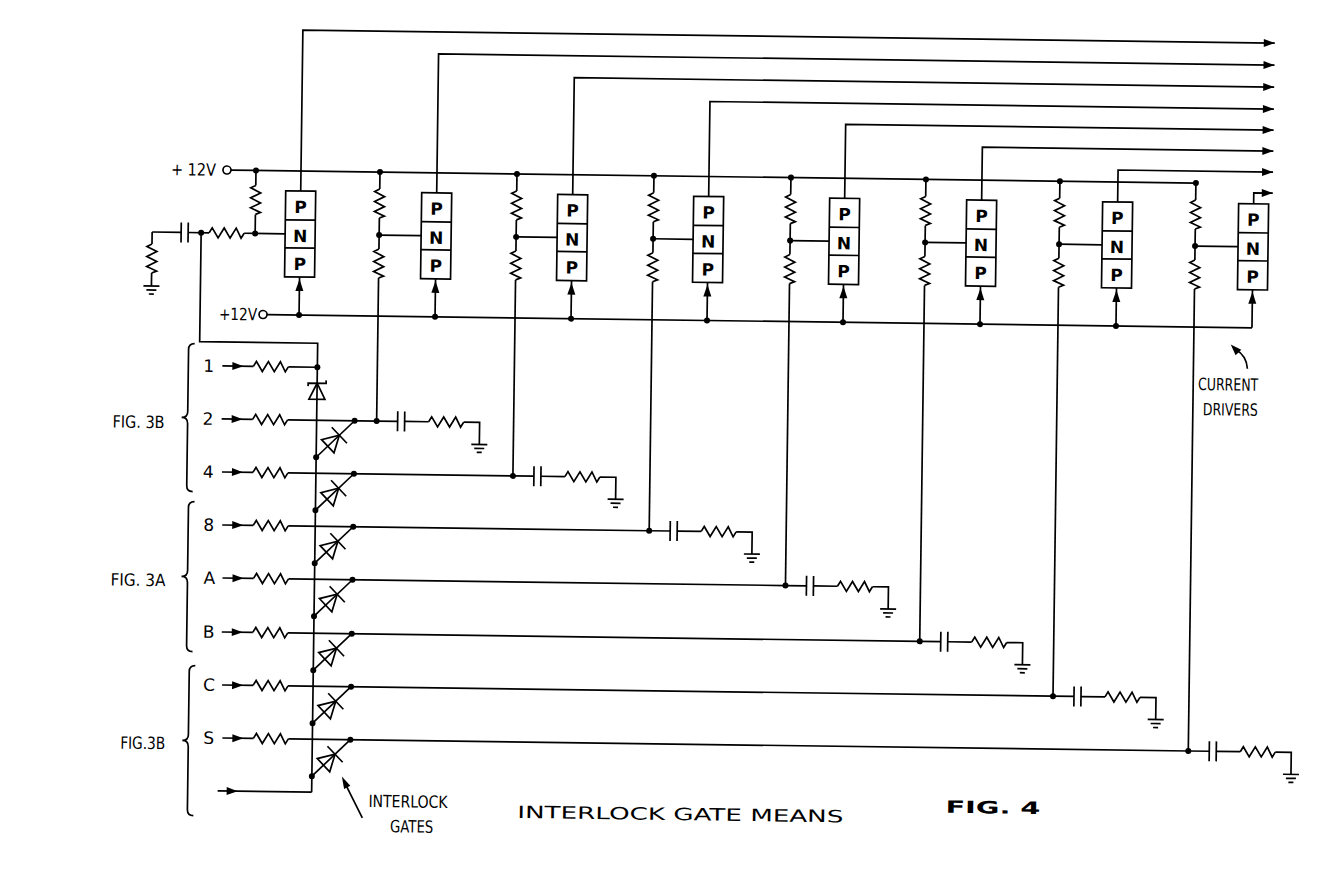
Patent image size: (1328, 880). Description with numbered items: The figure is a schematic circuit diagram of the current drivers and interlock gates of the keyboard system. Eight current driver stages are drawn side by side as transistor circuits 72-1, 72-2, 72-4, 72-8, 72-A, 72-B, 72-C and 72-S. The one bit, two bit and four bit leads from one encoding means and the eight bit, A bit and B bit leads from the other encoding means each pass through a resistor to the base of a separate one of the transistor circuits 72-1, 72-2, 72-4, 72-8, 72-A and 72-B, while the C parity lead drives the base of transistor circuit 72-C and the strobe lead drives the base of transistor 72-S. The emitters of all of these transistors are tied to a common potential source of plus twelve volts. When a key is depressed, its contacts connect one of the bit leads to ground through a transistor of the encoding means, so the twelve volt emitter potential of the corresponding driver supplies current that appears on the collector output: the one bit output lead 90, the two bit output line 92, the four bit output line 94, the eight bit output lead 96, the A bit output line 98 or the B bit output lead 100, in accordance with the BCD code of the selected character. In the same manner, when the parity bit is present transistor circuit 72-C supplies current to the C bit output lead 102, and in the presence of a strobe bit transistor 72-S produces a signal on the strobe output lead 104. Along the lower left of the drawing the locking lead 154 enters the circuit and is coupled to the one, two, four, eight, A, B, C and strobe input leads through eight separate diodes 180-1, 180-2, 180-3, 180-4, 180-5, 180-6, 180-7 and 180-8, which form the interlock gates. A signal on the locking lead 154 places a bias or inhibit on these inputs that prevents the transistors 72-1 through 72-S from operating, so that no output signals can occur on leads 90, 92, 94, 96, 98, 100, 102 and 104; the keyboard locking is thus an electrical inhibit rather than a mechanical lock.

The 1 bit output lead 90 is at (301, 36).
The 2 bit output line 92 is at (437, 57).
The 4 bit output line 94 is at (573, 80).
The 8 bit output lead 96 is at (709, 101).
The A bit output line 98 is at (845, 122).
The B bit output lead 100 is at (982, 144).
The C bit output lead 102 is at (1118, 160).
The strobe output lead 104 is at (1254, 184).
The transistor circuit 72-1 is at (337, 199).
The transistor circuit 72-2 is at (473, 199).
The transistor circuit 72-4 is at (609, 199).
The transistor circuit 72-8 is at (745, 199).
The transistor circuit 72-A is at (881, 199).
The transistor circuit 72-B is at (1018, 199).
The transistor circuit 72-C is at (1154, 199).
The transistor 72-S is at (1269, 227).
The diode 180-1 is at (327, 393).
The diode 180-2 is at (350, 442).
The diode 180-3 is at (350, 495).
The diode 180-4 is at (350, 548).
The diode 180-5 is at (350, 601).
The diode 180-6 is at (350, 655).
The diode 180-7 is at (350, 708).
The diode 180-8 is at (350, 761).
The locking lead 154 is at (285, 795).